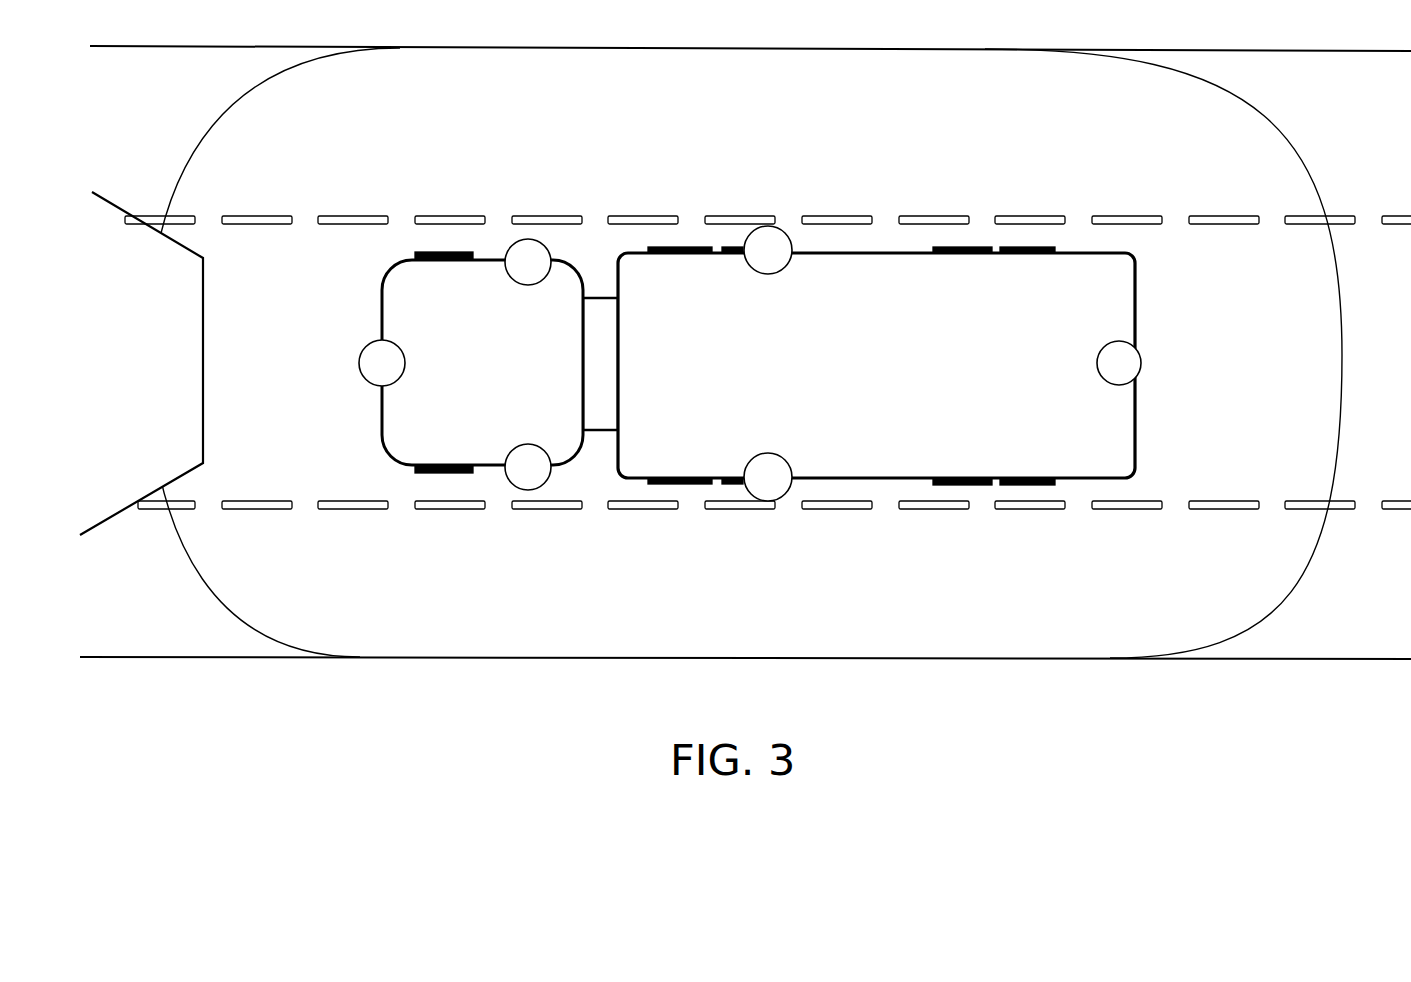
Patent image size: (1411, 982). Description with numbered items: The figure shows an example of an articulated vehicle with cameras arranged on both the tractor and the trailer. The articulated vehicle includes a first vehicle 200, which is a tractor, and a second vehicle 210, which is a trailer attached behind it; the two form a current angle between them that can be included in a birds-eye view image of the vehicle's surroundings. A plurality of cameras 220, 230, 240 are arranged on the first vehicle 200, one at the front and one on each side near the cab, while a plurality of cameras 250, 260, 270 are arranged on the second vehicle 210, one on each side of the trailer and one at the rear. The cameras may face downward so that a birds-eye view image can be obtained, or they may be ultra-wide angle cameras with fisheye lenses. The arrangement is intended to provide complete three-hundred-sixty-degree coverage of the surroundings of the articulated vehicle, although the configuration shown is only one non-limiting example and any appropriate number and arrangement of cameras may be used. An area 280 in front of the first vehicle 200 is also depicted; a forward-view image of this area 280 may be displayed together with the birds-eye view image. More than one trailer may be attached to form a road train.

The first vehicle 200 is at (769, 352).
The second vehicle 210 is at (880, 253).
The camera 220 is at (368, 380).
The camera 230 is at (548, 243).
The camera 240 is at (512, 484).
The camera 250 is at (745, 230).
The camera 260 is at (765, 499).
The camera 270 is at (1141, 365).
The area in front of the first vehicle 280 is at (192, 360).